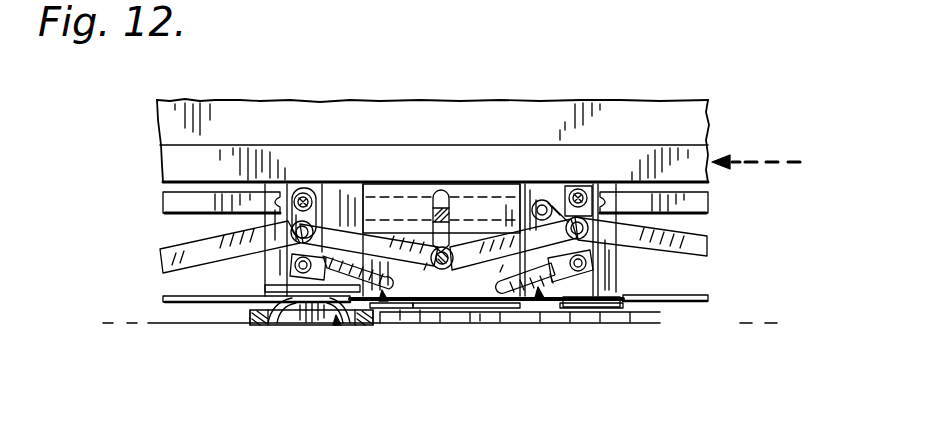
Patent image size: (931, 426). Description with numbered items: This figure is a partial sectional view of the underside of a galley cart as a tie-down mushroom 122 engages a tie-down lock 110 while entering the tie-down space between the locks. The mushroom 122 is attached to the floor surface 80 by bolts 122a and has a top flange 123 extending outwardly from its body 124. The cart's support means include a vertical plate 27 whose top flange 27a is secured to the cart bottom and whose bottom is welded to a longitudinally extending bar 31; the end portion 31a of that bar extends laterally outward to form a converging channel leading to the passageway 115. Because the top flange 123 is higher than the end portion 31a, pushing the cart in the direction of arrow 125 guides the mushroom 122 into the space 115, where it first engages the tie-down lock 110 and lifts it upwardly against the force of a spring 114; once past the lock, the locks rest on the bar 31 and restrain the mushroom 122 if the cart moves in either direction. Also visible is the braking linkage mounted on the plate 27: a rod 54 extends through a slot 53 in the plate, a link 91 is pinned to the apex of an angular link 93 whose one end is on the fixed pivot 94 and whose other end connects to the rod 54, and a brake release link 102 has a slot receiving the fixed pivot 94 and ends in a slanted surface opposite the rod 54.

The arrow 125 is at (772, 160).
The link 102 is at (182, 204).
The top flange 123 is at (277, 288).
The slot 53 is at (441, 190).
The rod 54 is at (449, 249).
The fixed pivot 94 is at (305, 194).
The link 91 is at (162, 259).
The spring 114 is at (348, 242).
The angular link 93 is at (451, 276).
The tie-down lock 110 is at (387, 303).
The end portion 31a is at (165, 297).
The bar 31 is at (413, 307).
The vertical plate 27 is at (445, 308).
The top flange 27a is at (460, 308).
The passageway 115 is at (470, 307).
The floor surface 80 is at (197, 327).
The tie-down mushroom 122 is at (338, 313).
The bolts 122a is at (282, 298).
The body 124 is at (290, 303).